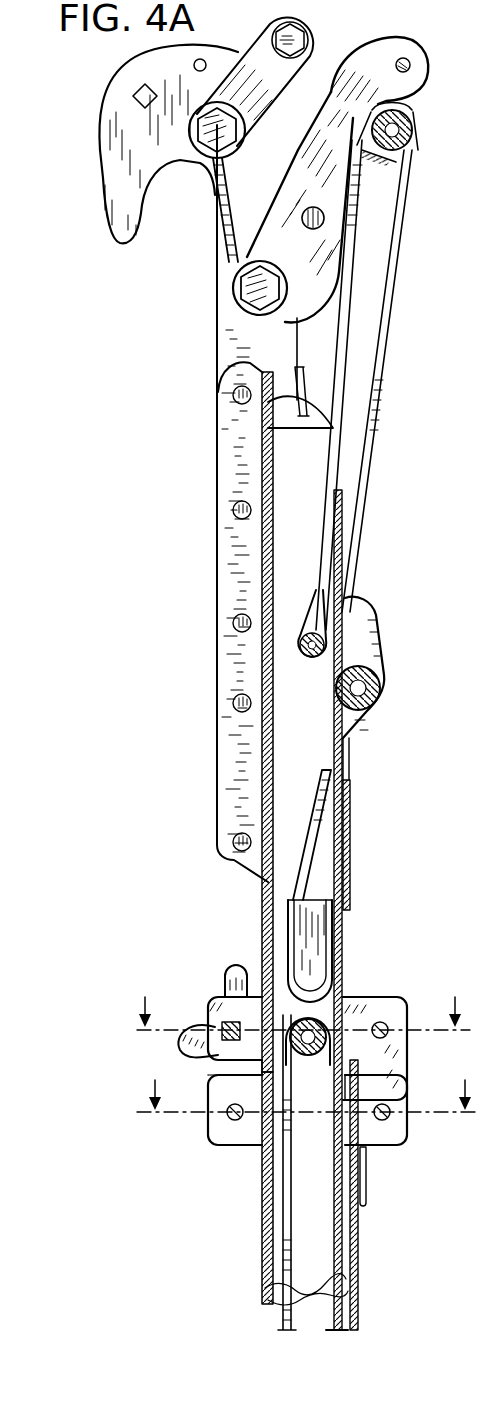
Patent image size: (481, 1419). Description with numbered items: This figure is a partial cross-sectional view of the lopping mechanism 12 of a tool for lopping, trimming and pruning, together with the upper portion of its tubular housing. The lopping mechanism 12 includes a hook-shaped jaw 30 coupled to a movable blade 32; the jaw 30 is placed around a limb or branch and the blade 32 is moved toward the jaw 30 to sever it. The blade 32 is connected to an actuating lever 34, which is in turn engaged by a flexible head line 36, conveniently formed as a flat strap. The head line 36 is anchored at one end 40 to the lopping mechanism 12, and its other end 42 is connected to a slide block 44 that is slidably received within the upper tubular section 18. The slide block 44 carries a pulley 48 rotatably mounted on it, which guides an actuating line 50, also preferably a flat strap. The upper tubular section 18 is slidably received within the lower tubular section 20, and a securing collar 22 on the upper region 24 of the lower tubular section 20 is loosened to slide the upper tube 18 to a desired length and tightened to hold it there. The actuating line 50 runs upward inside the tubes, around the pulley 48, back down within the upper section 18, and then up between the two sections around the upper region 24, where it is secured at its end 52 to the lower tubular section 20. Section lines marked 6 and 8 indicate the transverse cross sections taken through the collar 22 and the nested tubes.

The lopping mechanism 12 is at (196, 444).
The upper tubular section 18 is at (265, 915).
The lower tubular section 20 is at (262, 1283).
The securing collar 22 is at (372, 1003).
The upper region 24 is at (364, 1233).
The hook-shaped jaw 30 is at (115, 213).
The movable blade 32 is at (247, 219).
The actuating lever 34 is at (373, 61).
The head line 36 is at (386, 380).
The one end of head line 40 is at (307, 612).
The other end of head line 42 is at (293, 883).
The slide block 44 is at (313, 895).
The pulley 48 is at (306, 1062).
The actuating line 50 is at (350, 1318).
The one end of actuating line 52 is at (365, 1207).
The section line 6- 6 is at (303, 999).
The section line 8- 8 is at (307, 1111).